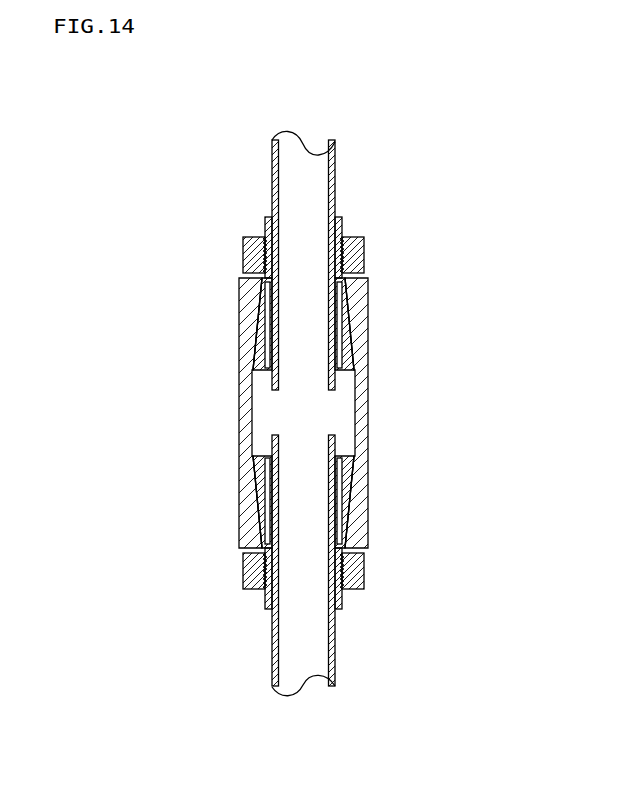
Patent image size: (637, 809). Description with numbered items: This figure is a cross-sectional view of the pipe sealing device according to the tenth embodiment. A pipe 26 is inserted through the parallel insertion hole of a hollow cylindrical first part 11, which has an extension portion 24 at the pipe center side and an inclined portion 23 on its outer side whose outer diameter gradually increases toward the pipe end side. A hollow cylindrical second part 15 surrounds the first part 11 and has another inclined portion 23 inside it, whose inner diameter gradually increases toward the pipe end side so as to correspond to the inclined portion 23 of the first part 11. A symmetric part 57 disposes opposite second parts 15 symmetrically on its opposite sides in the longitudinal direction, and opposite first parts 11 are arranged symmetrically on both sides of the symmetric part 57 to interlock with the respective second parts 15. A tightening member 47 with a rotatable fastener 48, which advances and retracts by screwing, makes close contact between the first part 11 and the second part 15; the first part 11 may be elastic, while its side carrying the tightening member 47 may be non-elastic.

The pipe 26 is at (255, 150).
The extension portion 24 is at (255, 215).
The rotatable fastener 48 is at (242, 250).
The tightening member 47 is at (348, 228).
The second part 15 is at (233, 327).
The symmetric part 57 is at (363, 420).
The first part 11 is at (341, 358).
The inclined portion 23 is at (342, 322).